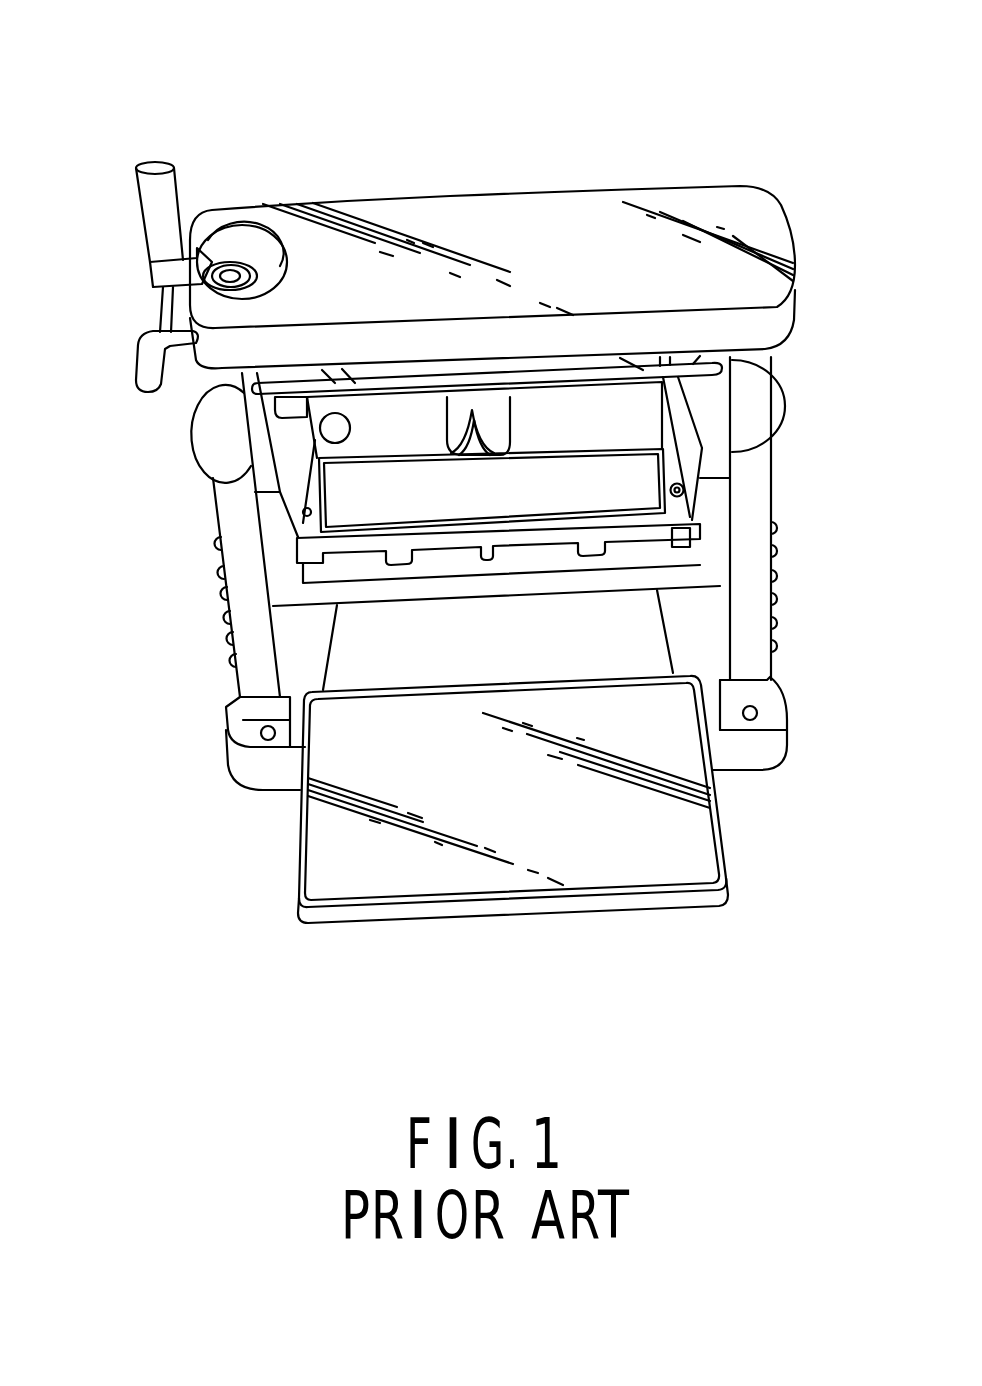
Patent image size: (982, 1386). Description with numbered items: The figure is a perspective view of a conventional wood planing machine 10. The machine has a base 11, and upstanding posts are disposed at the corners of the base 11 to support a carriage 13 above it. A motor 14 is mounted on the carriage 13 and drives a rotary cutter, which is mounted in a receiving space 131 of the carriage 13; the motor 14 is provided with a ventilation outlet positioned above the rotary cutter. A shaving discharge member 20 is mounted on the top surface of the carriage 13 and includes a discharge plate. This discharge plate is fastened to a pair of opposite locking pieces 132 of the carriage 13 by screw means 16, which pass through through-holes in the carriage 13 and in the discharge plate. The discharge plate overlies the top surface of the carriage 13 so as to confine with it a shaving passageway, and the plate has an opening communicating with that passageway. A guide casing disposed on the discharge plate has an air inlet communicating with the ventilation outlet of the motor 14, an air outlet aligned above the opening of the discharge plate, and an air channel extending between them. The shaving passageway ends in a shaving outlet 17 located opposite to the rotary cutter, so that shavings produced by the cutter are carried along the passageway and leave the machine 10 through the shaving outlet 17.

The wood planing machine 10 is at (745, 158).
The base 11 is at (775, 686).
The carriage 13 is at (263, 513).
The receiving space 131 is at (303, 581).
The locking pieces 132 is at (300, 552).
The motor 14 is at (650, 403).
The screw means 16 is at (687, 490).
The shaving outlet 17 is at (343, 567).
The shaving discharge member 20 is at (537, 427).